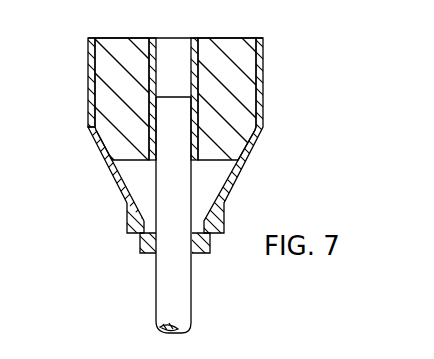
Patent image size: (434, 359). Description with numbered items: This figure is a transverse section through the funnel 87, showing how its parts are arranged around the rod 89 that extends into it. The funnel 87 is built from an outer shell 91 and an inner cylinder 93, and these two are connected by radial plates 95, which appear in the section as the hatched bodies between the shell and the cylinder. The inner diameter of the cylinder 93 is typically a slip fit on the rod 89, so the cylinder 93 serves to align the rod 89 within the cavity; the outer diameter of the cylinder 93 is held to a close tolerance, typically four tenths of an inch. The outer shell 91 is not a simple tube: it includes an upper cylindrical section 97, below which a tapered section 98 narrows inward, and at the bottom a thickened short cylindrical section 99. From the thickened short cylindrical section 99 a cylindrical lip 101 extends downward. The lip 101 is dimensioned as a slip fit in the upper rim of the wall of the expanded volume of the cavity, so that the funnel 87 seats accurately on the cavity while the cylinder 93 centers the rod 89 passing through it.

The funnel 87 is at (263, 48).
The rod 89 is at (186, 288).
The outer shell 91 is at (263, 100).
The inner cylinder 93 is at (190, 74).
The radial plates 95 is at (103, 90).
The cylindrical section 97 is at (90, 57).
The tapered sleeve portion 98 is at (112, 168).
The thickened short cylindrical section 99 is at (127, 227).
The cylindrical lip 101 is at (141, 243).